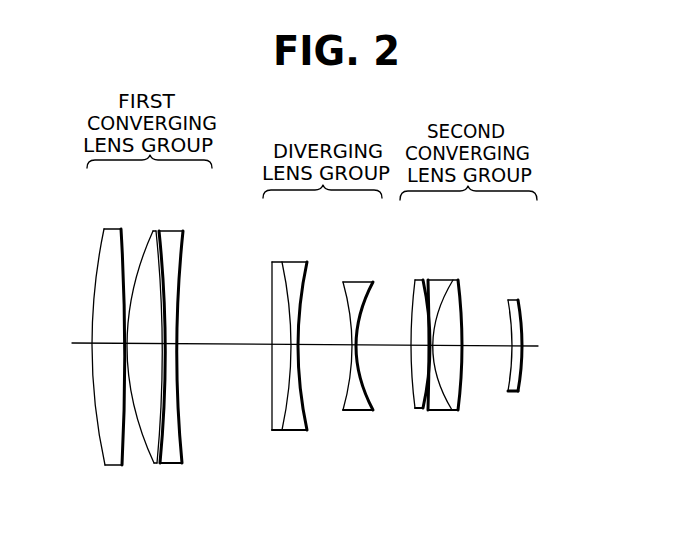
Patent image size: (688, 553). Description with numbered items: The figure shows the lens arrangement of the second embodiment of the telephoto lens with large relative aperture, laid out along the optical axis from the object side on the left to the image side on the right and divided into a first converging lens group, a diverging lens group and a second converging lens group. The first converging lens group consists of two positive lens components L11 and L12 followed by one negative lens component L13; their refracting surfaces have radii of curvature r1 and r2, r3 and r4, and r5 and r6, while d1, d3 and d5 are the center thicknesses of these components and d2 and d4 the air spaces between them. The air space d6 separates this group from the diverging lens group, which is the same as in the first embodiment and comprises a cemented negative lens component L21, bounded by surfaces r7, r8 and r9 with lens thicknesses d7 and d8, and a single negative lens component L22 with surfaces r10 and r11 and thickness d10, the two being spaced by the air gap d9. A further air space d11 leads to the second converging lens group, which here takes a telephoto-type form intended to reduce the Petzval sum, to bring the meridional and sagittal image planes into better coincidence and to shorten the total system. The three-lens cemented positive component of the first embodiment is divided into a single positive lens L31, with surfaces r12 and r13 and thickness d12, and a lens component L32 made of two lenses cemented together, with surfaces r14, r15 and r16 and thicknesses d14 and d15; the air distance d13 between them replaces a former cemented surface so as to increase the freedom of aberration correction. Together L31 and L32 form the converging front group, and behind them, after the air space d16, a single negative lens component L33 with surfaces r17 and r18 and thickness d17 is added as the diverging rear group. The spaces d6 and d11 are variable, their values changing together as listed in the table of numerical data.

The positive lens component L11 is at (110, 227).
The positive lens component L12 is at (157, 229).
The negative lens component L13 is at (177, 229).
The cemented negative lens component L21 is at (290, 260).
The negative lens component L22 is at (355, 280).
The single positive lens L31 is at (420, 278).
The lens component comprising two lenses cemented together L32 is at (447, 278).
The single negative lens component L33 is at (512, 298).
The radius of curvature r1 is at (105, 466).
The radius of curvature r2 is at (114, 466).
The radius of curvature r3 is at (154, 464).
The radius of curvature r4 is at (158, 464).
The radius of curvature r5 is at (164, 466).
The radius of curvature r6 is at (181, 466).
The radius of curvature r7 is at (274, 431).
The radius of curvature r8 is at (284, 431).
The radius of curvature r9 is at (304, 431).
The radius of curvature r10 is at (346, 411).
The radius of curvature r11 is at (368, 411).
The radius of curvature r12 is at (413, 409).
The radius of curvature r13 is at (418, 409).
The radius of curvature r14 is at (430, 411).
The radius of curvature r15 is at (450, 411).
The radius of curvature r16 is at (463, 411).
The radius of curvature r17 is at (509, 393).
The radius of curvature r18 is at (519, 393).
The center thickness d1 is at (114, 342).
The air space d2 is at (123, 343).
The center thickness d3 is at (153, 343).
The air space d4 is at (163, 343).
The center thickness d5 is at (170, 343).
The air space d6 is at (242, 344).
The center thickness d7 is at (281, 342).
The center thickness d8 is at (297, 340).
The air space d9 is at (341, 345).
The center thickness d10 is at (352, 346).
The air space d11 is at (401, 345).
The center thickness d12 is at (412, 345).
The air space d13 is at (428, 348).
The center thickness d14 is at (434, 338).
The center thickness d15 is at (436, 335).
The air space d16 is at (499, 345).
The center thickness d17 is at (518, 337).